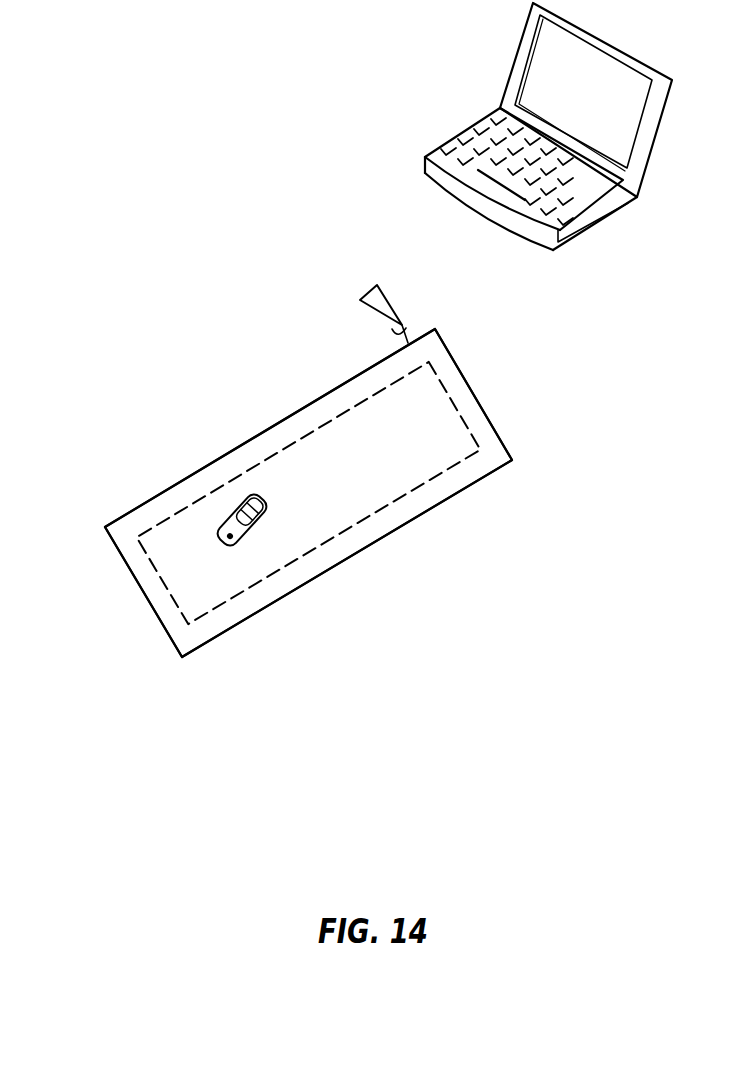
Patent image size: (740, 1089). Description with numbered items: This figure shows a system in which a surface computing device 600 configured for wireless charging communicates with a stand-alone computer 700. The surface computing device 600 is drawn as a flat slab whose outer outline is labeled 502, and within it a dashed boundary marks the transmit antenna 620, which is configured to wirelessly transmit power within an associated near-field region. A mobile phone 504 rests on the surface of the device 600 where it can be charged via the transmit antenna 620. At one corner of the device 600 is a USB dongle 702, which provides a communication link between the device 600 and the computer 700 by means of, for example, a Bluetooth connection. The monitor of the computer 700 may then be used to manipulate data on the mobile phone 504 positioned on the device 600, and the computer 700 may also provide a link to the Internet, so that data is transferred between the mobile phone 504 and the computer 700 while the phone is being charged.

The computer 700 is at (423, 153).
The USB dongle 702 is at (407, 325).
The surface computing device 600 is at (490, 415).
The charging mat 502 is at (400, 527).
The transmit antenna 620 is at (170, 588).
The mobile phone 504 is at (218, 535).